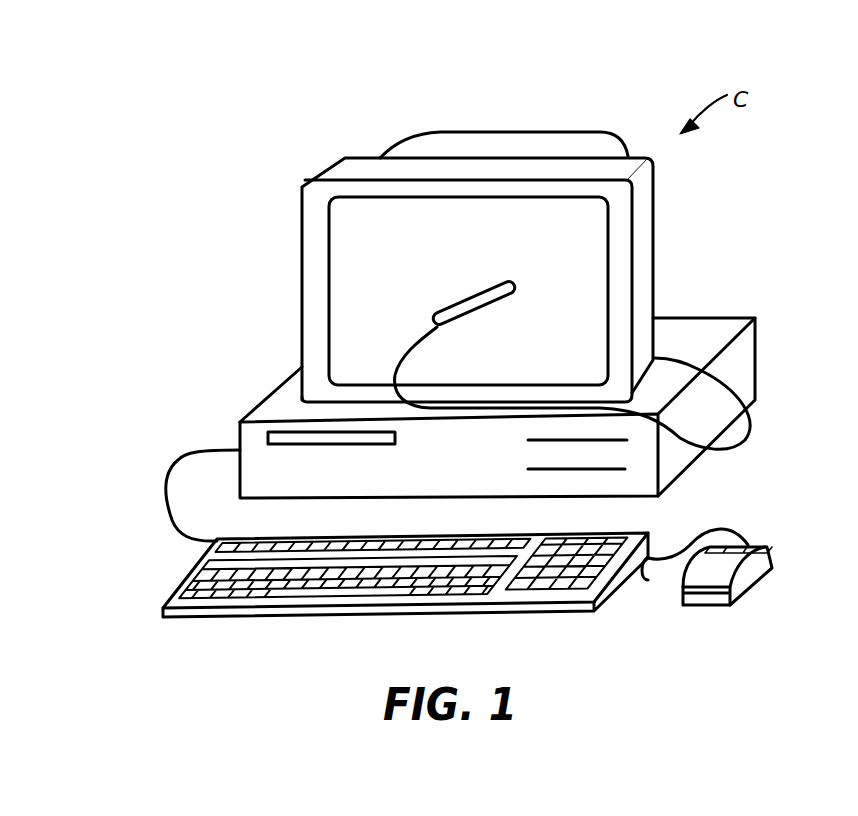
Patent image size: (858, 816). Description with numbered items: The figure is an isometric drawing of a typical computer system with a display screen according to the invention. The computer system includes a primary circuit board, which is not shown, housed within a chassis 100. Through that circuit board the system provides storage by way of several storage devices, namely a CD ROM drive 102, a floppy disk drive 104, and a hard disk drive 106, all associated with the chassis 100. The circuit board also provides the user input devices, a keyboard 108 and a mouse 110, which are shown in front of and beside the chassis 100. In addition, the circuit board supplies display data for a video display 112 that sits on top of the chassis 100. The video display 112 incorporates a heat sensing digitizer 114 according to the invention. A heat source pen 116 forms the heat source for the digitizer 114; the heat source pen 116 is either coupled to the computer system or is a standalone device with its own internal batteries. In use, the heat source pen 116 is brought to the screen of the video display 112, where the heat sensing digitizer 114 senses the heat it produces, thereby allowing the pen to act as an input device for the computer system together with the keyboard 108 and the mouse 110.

The chassis 100 is at (757, 324).
The CD ROM drive 102 is at (268, 440).
The floppy disk drive 104 is at (608, 468).
The hard disk drive 106 is at (528, 440).
The keyboard 108 is at (612, 596).
The mouse 110 is at (768, 547).
The video display 112 is at (345, 158).
The heat sensing digitizer 114 is at (593, 253).
The heat source pen 116 is at (440, 314).